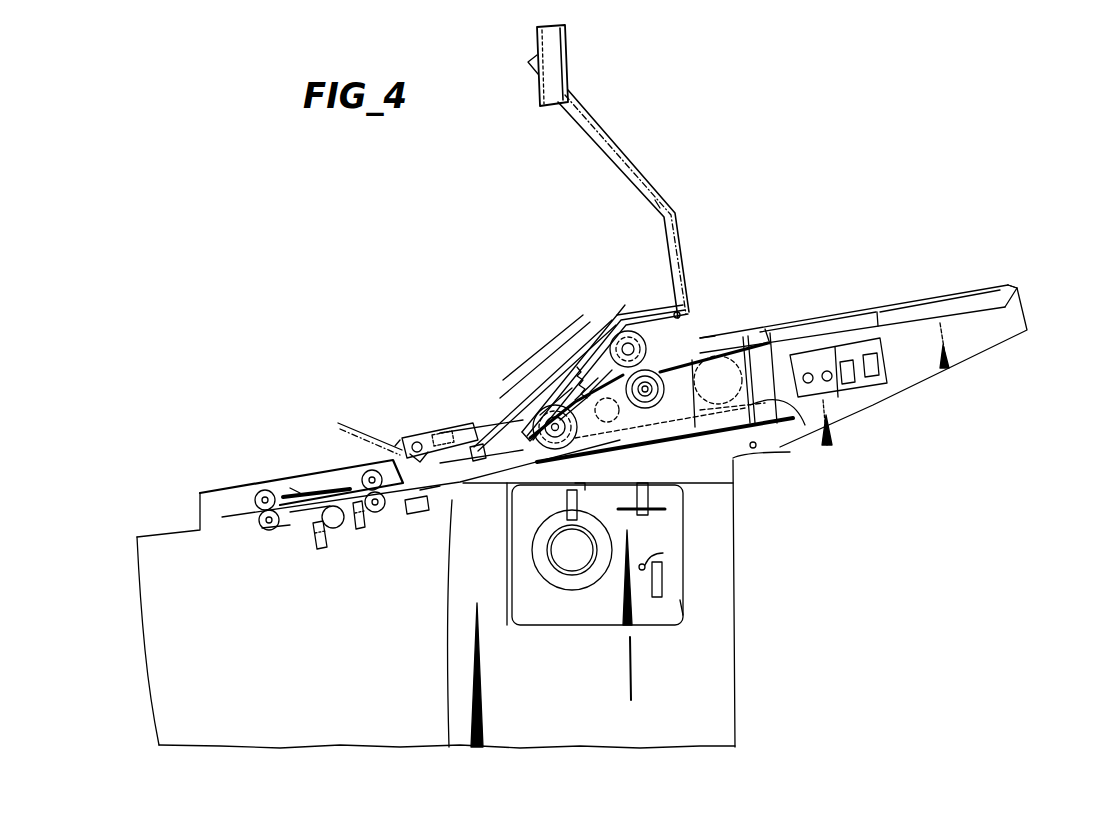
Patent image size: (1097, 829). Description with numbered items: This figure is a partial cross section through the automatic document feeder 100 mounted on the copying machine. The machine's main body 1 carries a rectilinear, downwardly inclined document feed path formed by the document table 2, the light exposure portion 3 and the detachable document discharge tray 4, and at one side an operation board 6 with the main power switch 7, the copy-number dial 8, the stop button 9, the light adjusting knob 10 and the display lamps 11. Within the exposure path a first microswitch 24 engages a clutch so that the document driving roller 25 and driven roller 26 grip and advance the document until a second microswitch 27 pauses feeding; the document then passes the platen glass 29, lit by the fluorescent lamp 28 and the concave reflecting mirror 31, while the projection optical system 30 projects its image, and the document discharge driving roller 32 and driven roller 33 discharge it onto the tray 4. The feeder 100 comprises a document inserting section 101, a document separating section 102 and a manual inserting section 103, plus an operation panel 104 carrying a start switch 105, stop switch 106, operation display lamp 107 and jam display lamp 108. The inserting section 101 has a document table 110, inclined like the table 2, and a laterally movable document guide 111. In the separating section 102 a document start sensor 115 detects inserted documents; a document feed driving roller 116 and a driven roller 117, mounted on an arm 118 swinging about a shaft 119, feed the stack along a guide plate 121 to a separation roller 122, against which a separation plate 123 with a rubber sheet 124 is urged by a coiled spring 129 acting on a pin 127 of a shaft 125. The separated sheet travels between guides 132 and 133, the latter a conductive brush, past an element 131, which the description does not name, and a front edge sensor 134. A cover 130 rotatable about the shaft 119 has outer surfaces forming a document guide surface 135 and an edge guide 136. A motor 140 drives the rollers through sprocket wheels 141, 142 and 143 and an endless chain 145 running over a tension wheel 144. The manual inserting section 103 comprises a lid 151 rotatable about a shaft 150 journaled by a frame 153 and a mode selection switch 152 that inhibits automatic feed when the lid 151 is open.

The main body 1 is at (745, 656).
The document table 2 is at (761, 468).
The light exposure portion 3 is at (253, 483).
The document discharge tray 4 is at (153, 530).
The operation board 6 is at (673, 605).
The main power switch 7 is at (658, 600).
The dial 8 is at (577, 560).
The stop button 9 is at (683, 530).
The light adjusting knob 10 is at (680, 505).
The display lamps 11 is at (680, 565).
The first microswitch 24 is at (397, 528).
The document driving roller 25 is at (366, 496).
The driven roller 26 is at (367, 470).
The second microswitch 27 is at (337, 528).
The fluorescent lamp 28 is at (333, 528).
The platen glass 29 is at (290, 488).
The projection optical system 30 is at (283, 513).
The concave reflecting mirror 31 is at (267, 527).
The document discharge driving roller 32 is at (273, 520).
The driven roller 33 is at (255, 492).
The automatic document feeder 100 is at (1012, 253).
The document inserting section 101 is at (902, 300).
The document separating section 102 is at (627, 310).
The manual inserting section 103 is at (418, 434).
The operation panel 104 is at (890, 352).
The start switch 105 is at (920, 366).
The stop switch 106 is at (880, 368).
The operation display lamp 107 is at (860, 385).
The jam display lamp 108 is at (829, 381).
The document table 110 is at (1010, 284).
The document guide 111 is at (825, 322).
The document start sensor 115 is at (695, 362).
The document feed driving roller 116 is at (715, 410).
The driven roller 117 is at (635, 332).
The arm 118 is at (680, 310).
The shaft 119 is at (690, 330).
The guide plate 121 is at (589, 569).
The separation roller 122 is at (575, 445).
The separation plate 123 is at (575, 395).
The rubber sheet 124 is at (556, 410).
The shaft 125 is at (593, 385).
The pin 127 is at (593, 333).
The coiled spring 129 is at (612, 312).
The cover 130 is at (668, 276).
The guide plate 131 is at (478, 445).
The guide 132 is at (450, 445).
The guide 133 is at (500, 440).
The front edge sensor 134 is at (430, 573).
The document guide surface 135 is at (548, 400).
The edge guide 136 is at (535, 412).
The motor 140 is at (808, 383).
The sprocket wheel 141 is at (665, 380).
The sprocket wheel 142 is at (680, 500).
The sprocket wheel 143 is at (545, 470).
The tension wheel 144 is at (610, 422).
The endless chain 145 is at (775, 455).
The shaft 150 is at (370, 426).
The lid 151 is at (398, 440).
The mode selection switch 152 is at (440, 520).
The frame 153 is at (430, 507).